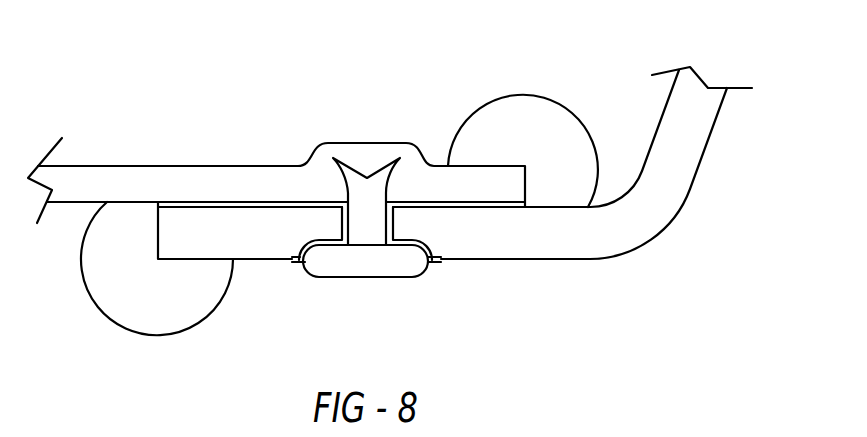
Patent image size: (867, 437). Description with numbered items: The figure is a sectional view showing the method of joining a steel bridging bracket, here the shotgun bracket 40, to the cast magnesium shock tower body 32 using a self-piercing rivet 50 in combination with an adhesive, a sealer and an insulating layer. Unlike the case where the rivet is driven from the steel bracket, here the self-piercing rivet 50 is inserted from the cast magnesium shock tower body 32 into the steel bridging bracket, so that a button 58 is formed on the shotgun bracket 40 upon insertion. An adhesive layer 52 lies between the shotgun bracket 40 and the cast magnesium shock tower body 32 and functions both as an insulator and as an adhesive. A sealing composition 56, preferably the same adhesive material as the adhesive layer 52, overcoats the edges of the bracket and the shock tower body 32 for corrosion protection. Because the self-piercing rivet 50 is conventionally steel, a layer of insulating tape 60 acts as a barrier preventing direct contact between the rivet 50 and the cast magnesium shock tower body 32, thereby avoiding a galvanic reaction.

The cast magnesium shock tower body 32 is at (673, 172).
The shotgun bracket 40 is at (118, 178).
The self-piercing rivet 50 is at (340, 263).
The adhesive layer 52 is at (242, 208).
The sealing composition 56 is at (537, 125).
The button 58 is at (365, 155).
The insulating tape 60 is at (427, 244).